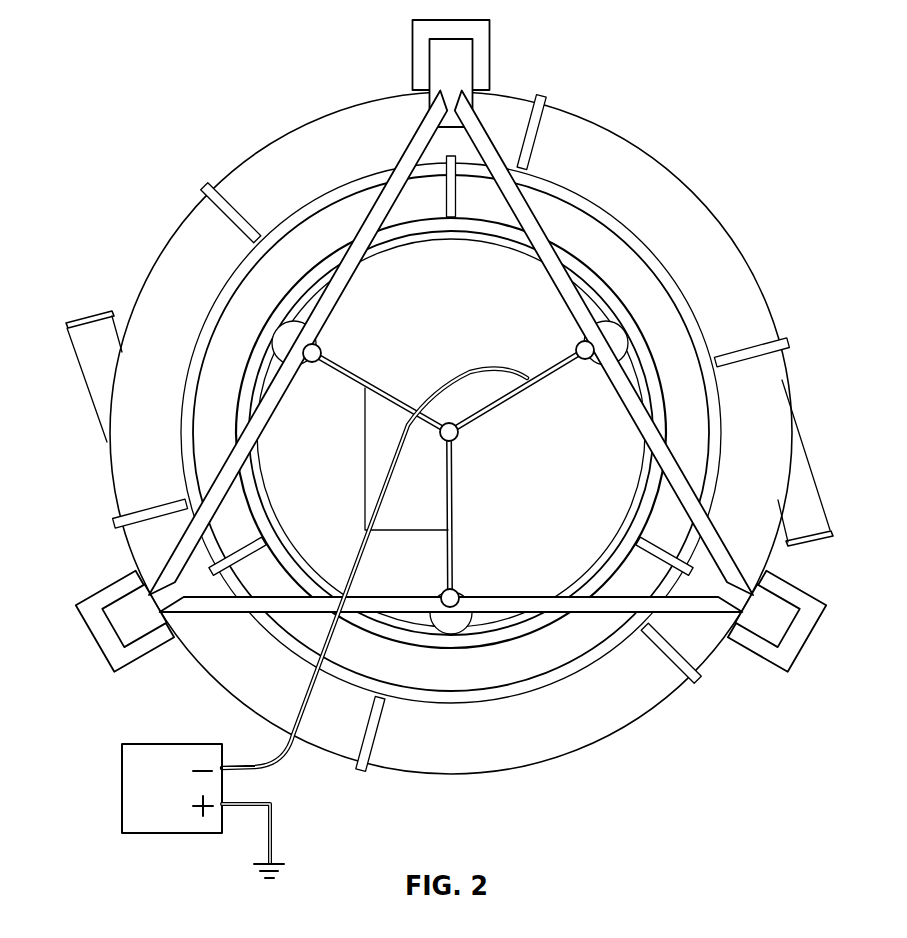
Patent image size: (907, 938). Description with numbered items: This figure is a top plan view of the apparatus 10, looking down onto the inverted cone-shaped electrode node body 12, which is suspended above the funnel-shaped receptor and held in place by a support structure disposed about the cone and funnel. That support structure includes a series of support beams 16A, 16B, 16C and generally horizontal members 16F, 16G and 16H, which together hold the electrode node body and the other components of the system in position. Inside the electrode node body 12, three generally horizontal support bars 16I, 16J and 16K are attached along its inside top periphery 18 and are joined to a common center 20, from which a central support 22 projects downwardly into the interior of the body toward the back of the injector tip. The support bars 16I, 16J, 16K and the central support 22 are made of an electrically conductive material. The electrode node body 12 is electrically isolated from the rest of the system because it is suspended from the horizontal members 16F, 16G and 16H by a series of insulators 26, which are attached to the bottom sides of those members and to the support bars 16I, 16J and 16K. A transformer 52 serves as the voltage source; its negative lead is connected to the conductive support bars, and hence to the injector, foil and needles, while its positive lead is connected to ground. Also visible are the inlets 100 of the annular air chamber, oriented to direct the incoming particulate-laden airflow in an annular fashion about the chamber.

The apparatus 10 is at (132, 48).
The electrode node body 12 is at (503, 268).
The inside top periphery 18 is at (255, 360).
The support beam 16A is at (105, 628).
The support beam 16B is at (794, 629).
The support beam 16C is at (429, 54).
The horizontal member 16F is at (548, 598).
The horizontal member 16G is at (556, 270).
The horizontal member 16H is at (345, 270).
The support bar 16I is at (455, 540).
The support bar 16J is at (566, 362).
The support bar 16K is at (361, 385).
The common center 20 is at (445, 425).
The central support 22 is at (462, 438).
The insulators 26 is at (320, 346).
The transformer 52 is at (137, 783).
The inlets 100 is at (96, 358).